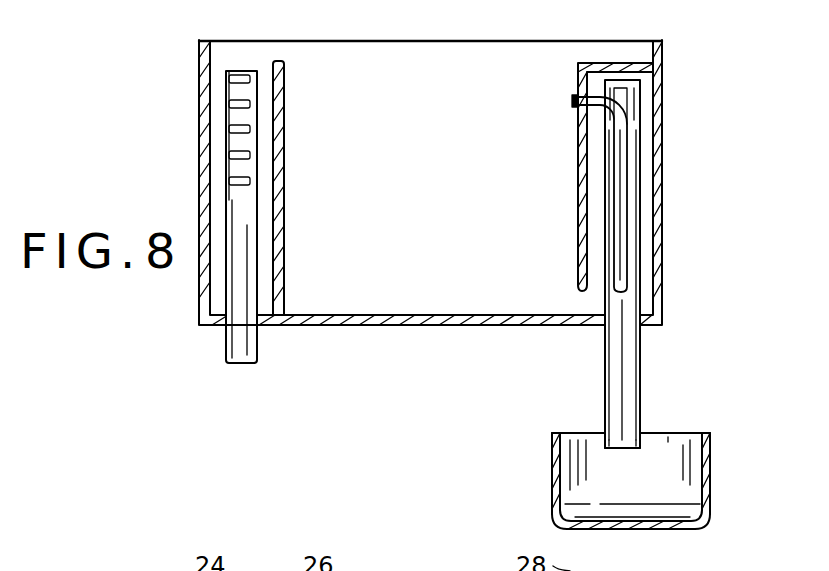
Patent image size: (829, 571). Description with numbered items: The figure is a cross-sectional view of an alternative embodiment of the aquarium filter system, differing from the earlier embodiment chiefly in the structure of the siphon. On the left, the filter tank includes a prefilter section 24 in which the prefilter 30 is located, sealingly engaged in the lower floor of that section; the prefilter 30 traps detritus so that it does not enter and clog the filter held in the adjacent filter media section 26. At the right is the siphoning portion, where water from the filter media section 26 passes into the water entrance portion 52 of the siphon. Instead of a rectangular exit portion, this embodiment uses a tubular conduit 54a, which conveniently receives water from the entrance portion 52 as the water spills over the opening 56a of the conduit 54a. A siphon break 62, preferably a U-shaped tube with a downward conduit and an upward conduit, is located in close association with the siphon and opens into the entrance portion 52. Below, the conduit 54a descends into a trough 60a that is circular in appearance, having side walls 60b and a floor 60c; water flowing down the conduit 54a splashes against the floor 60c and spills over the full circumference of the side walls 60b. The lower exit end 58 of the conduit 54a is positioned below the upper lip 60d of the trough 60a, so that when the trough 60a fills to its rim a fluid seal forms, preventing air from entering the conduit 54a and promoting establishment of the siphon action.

The prefilter section 24 is at (222, 55).
The filter media section 26 is at (333, 62).
The prefilter 30 is at (225, 104).
The water entrance portion 52 is at (646, 154).
The tubular conduit 54a is at (619, 107).
The opening of the conduit 56a is at (628, 68).
The lower exit end 58 is at (627, 452).
The trough 60a is at (680, 472).
The side walls of the trough 60b is at (548, 483).
The floor of the trough 60c is at (657, 530).
The upper lip of the trough 60d is at (706, 433).
The siphon break 62 is at (626, 222).